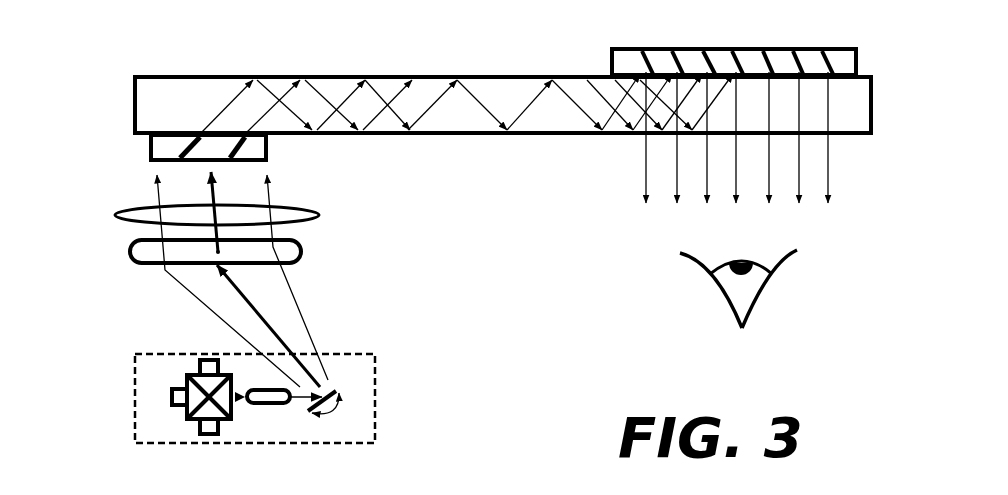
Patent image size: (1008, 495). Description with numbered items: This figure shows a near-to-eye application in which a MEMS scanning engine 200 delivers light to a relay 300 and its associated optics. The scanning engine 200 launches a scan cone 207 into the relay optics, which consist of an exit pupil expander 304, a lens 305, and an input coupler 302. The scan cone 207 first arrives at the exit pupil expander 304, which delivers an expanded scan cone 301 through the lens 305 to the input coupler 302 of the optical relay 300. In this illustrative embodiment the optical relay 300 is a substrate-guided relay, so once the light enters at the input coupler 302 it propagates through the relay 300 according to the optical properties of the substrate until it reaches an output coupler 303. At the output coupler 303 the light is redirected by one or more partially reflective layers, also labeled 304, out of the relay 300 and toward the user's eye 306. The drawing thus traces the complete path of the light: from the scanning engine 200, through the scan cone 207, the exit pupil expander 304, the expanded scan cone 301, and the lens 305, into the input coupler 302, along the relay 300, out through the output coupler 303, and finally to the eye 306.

The relay 300 is at (126, 116).
The expanded scan cone 301 is at (272, 197).
The input coupler 302 is at (148, 144).
The output coupler 303 is at (610, 65).
The exit pupil expander 304 is at (772, 63).
The lens 305 is at (320, 216).
The user's eye 306 is at (712, 283).
The scan cone 207 is at (308, 297).
The scanning engine 200 is at (375, 372).